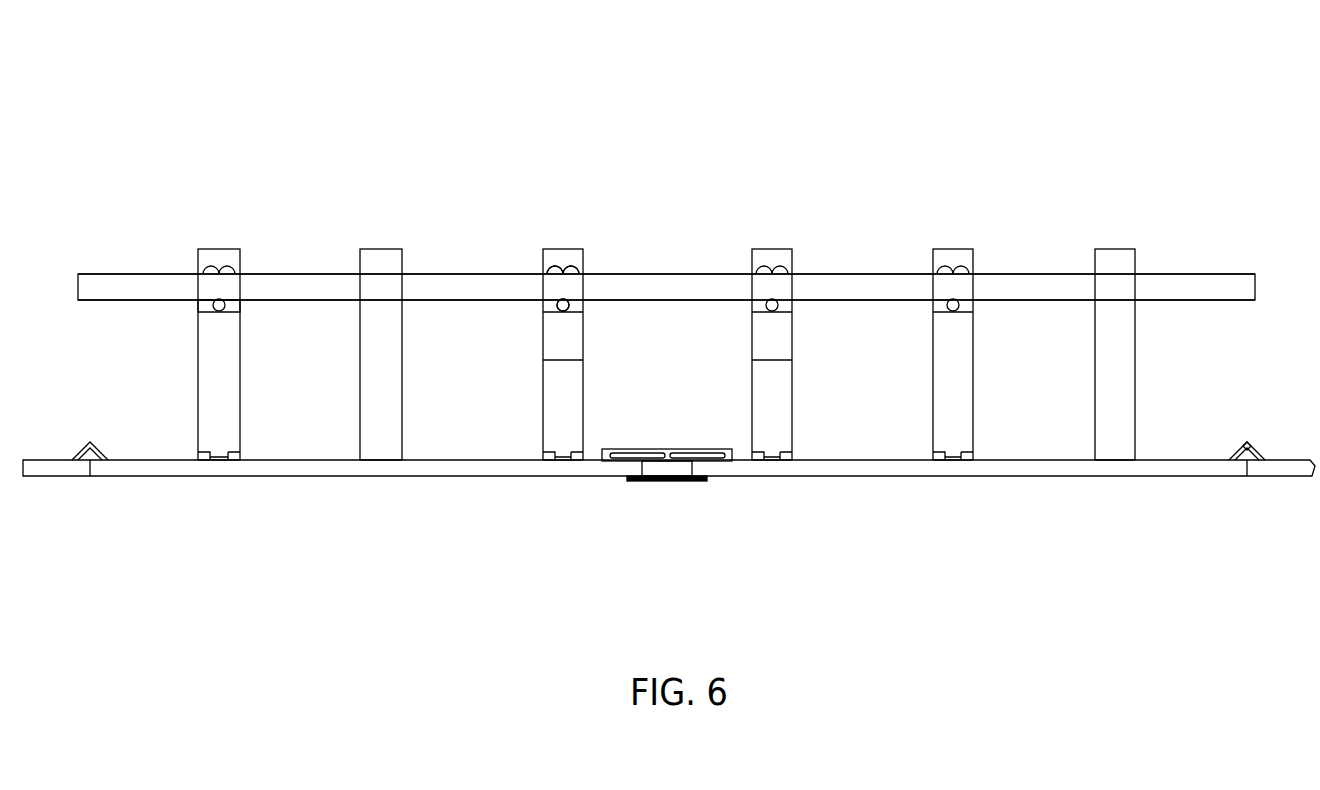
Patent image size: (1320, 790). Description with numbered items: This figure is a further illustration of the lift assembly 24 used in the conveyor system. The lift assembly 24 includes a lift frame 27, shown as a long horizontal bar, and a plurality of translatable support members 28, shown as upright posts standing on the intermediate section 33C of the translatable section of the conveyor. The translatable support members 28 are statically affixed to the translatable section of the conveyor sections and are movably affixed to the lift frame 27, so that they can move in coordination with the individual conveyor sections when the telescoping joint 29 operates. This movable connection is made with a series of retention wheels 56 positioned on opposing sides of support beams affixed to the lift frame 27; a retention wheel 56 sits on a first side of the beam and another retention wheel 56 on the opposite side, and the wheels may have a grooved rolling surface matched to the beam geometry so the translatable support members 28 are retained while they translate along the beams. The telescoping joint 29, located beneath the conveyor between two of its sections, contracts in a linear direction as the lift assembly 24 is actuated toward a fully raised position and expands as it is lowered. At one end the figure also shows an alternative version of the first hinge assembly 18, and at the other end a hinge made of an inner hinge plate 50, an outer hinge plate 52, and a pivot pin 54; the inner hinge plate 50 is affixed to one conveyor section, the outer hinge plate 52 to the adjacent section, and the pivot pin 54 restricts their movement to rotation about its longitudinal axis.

The lift assembly 24 is at (760, 108).
The lift frame 27 is at (130, 272).
The translatable support members 28 is at (218, 385).
The retention wheels 56 is at (553, 272).
The intermediate section 33C is at (466, 548).
The first hinge assembly 18 is at (90, 437).
The telescoping joint 29 is at (657, 494).
The inner hinge plate 50 is at (1260, 457).
The outer hinge plate 52 is at (1235, 458).
The pivot pin 54 is at (1249, 446).